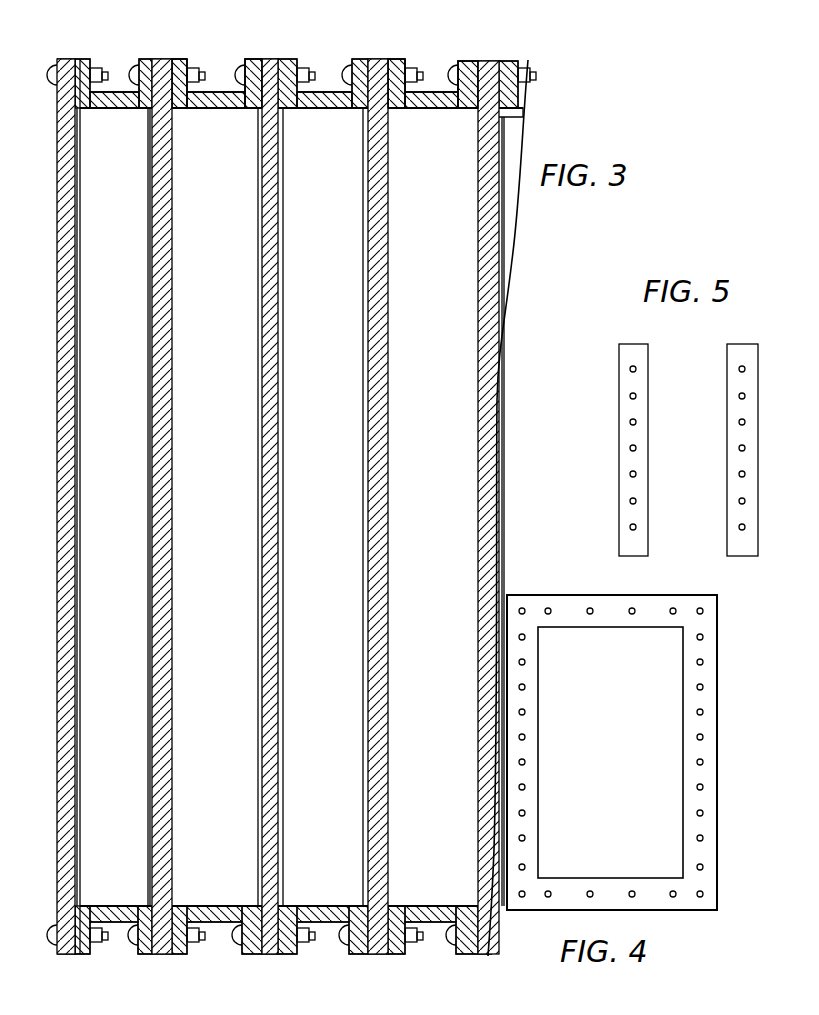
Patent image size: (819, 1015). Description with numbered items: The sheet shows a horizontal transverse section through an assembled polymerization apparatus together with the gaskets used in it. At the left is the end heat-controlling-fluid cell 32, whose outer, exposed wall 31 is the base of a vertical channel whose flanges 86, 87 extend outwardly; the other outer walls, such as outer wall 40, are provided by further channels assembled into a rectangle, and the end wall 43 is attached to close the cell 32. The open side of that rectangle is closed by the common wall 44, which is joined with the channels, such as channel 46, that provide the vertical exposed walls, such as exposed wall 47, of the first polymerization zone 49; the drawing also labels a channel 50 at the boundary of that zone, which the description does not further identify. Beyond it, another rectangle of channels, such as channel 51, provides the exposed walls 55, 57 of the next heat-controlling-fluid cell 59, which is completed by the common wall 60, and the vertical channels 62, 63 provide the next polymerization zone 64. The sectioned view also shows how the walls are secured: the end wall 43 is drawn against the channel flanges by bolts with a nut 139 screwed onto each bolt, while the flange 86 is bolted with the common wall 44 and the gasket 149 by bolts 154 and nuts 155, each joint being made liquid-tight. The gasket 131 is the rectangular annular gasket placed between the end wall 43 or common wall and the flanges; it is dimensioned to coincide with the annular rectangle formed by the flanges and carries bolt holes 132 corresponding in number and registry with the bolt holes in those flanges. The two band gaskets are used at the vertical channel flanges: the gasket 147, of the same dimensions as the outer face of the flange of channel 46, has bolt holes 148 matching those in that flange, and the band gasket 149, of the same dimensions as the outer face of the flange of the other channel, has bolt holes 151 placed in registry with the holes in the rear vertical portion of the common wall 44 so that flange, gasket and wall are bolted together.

In FIG. 3, the outer wall 31 is at (137, 113).
In FIG. 3, the heat-controlling-fluid cell 32 is at (100, 356).
In FIG. 3, the outer wall 40 is at (118, 942).
In FIG. 3, the end wall 43 is at (58, 100).
In FIG. 3, the common wall 44 is at (163, 232).
In FIG. 3, the channel 46 is at (220, 942).
In FIG. 3, the exposed wall 47 is at (218, 107).
In FIG. 3, the first polymerization zone 49 is at (227, 377).
In FIG. 3, the post 50 is at (270, 63).
In FIG. 3, the channel 51 is at (334, 92).
In FIG. 3, the exposed wall 55 is at (343, 95).
In FIG. 3, the exposed wall 57 is at (322, 942).
In FIG. 3, the heat-controlling-fluid cell 59 is at (338, 327).
In FIG. 3, the common wall 60 is at (377, 63).
In FIG. 3, the vertical channel 62 is at (428, 92).
In FIG. 3, the vertical channel 63 is at (435, 942).
In FIG. 3, the polymerization zone 64 is at (455, 258).
In FIG. 3, the flange 86 is at (152, 59).
In FIG. 3, the flange 87 is at (91, 59).
In FIG. 3, the gasket 131 is at (522, 116).
In FIG. 4, the gasket 131 is at (706, 850).
In FIG. 4, the bolt holes 132 is at (705, 663).
In FIG. 3, the nut 139 is at (94, 82).
In FIG. 3, the gasket 147 is at (173, 110).
In FIG. 5, the gasket 147 is at (625, 460).
In FIG. 5, the bolt holes 148 is at (630, 396).
In FIG. 3, the band gasket 149 is at (257, 108).
In FIG. 5, the band gasket 149 is at (733, 513).
In FIG. 5, the bolt holes 151 is at (744, 423).
In FIG. 3, the bolts 154 is at (234, 81).
In FIG. 3, the nuts 155 is at (308, 68).